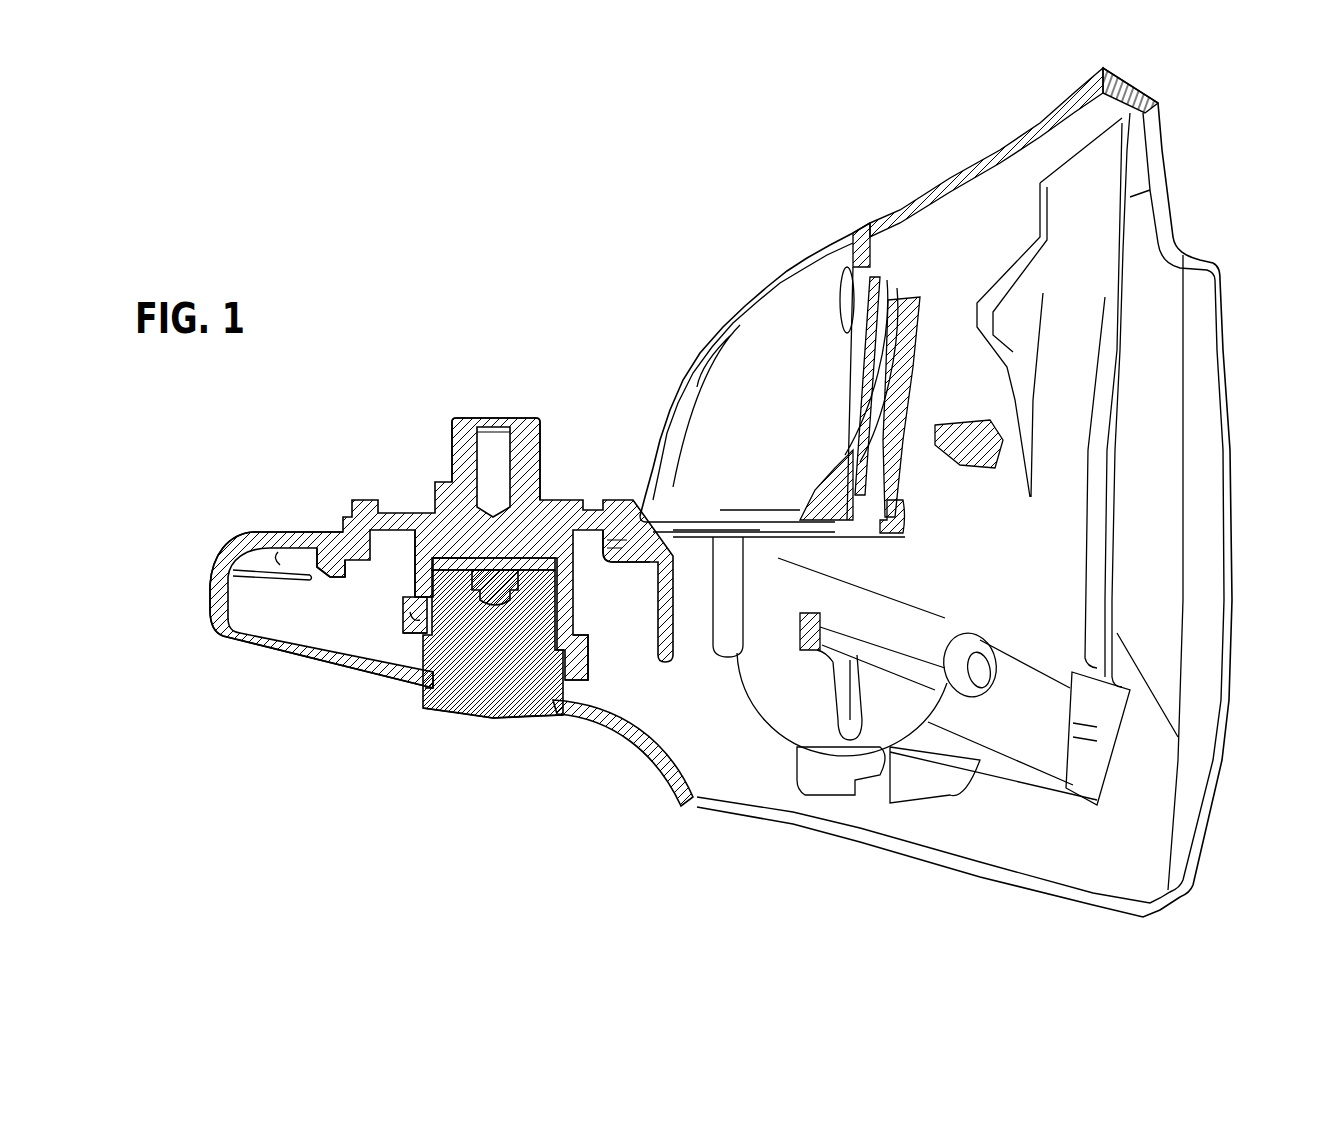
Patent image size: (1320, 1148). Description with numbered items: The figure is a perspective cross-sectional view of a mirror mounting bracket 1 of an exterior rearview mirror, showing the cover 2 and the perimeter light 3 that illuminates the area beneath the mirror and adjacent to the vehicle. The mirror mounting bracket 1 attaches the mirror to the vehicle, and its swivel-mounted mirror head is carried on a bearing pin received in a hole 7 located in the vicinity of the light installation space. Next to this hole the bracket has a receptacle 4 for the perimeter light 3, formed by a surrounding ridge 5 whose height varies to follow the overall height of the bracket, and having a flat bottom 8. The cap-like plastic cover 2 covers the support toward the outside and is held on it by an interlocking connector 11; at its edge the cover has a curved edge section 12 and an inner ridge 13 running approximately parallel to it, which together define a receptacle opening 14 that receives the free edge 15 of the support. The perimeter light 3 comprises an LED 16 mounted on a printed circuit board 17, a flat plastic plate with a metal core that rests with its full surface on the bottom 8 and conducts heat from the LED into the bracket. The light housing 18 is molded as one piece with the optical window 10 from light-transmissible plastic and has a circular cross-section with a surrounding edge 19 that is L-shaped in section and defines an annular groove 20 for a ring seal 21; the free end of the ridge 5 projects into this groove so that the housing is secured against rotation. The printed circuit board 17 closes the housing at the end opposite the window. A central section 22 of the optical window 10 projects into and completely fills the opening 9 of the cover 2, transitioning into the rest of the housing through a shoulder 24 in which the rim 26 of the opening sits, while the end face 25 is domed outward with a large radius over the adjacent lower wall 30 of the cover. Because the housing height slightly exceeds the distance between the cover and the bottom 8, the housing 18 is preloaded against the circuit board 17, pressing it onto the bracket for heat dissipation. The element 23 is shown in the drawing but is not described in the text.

The mirror mounting bracket 1 is at (697, 560).
The cover 2 is at (833, 240).
The perimeter light 3 is at (528, 612).
The receptacle 4 is at (428, 645).
The ridge 5 is at (420, 588).
The hole 7 is at (487, 438).
The bottom 8 is at (478, 558).
The opening 9 is at (466, 710).
The optical window 10 is at (521, 718).
The interlocking connector 11 is at (298, 548).
The curved edge section 12 is at (266, 531).
The inner ridge 13 is at (228, 582).
The receptacle opening 14 is at (250, 562).
The free edge 15 is at (290, 564).
The LED 16 is at (490, 586).
The printed circuit board 17 is at (544, 556).
The light housing 18 is at (607, 540).
The surrounding edge 19 is at (403, 602).
The annular groove 20 is at (582, 662).
The ring seal 21 is at (400, 625).
The central section 22 is at (531, 717).
The plate underside 23 is at (460, 550).
The shoulder 24 is at (578, 718).
The end face 25 is at (492, 716).
The rim 26 is at (432, 688).
The lower wall 30 is at (292, 660).